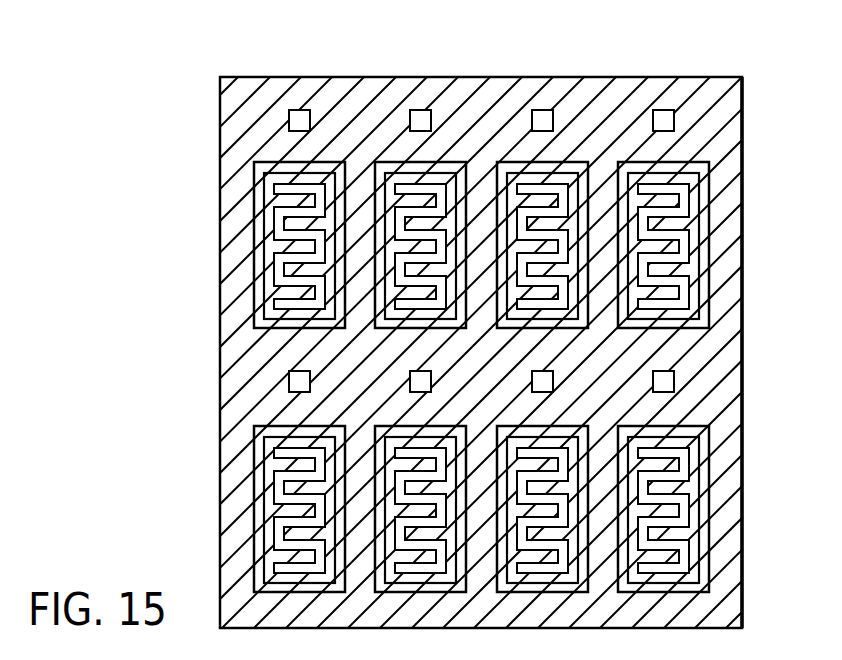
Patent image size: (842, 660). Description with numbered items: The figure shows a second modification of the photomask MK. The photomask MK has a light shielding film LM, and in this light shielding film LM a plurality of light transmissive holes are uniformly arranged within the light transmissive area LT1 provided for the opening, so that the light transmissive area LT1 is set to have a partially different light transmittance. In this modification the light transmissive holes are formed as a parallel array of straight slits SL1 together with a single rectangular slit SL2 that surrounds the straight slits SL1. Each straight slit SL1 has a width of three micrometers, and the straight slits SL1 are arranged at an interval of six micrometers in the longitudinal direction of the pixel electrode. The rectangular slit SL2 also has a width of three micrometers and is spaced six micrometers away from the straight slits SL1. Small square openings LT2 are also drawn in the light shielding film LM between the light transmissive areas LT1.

The photomask MK is at (592, 67).
The light shielding film LM is at (722, 144).
The light transmissive area LT1 is at (748, 163).
The second light-transmitting pattern LT2 is at (299, 113).
The straight slits SL1 is at (283, 220).
The rectangular slit SL2 is at (258, 296).